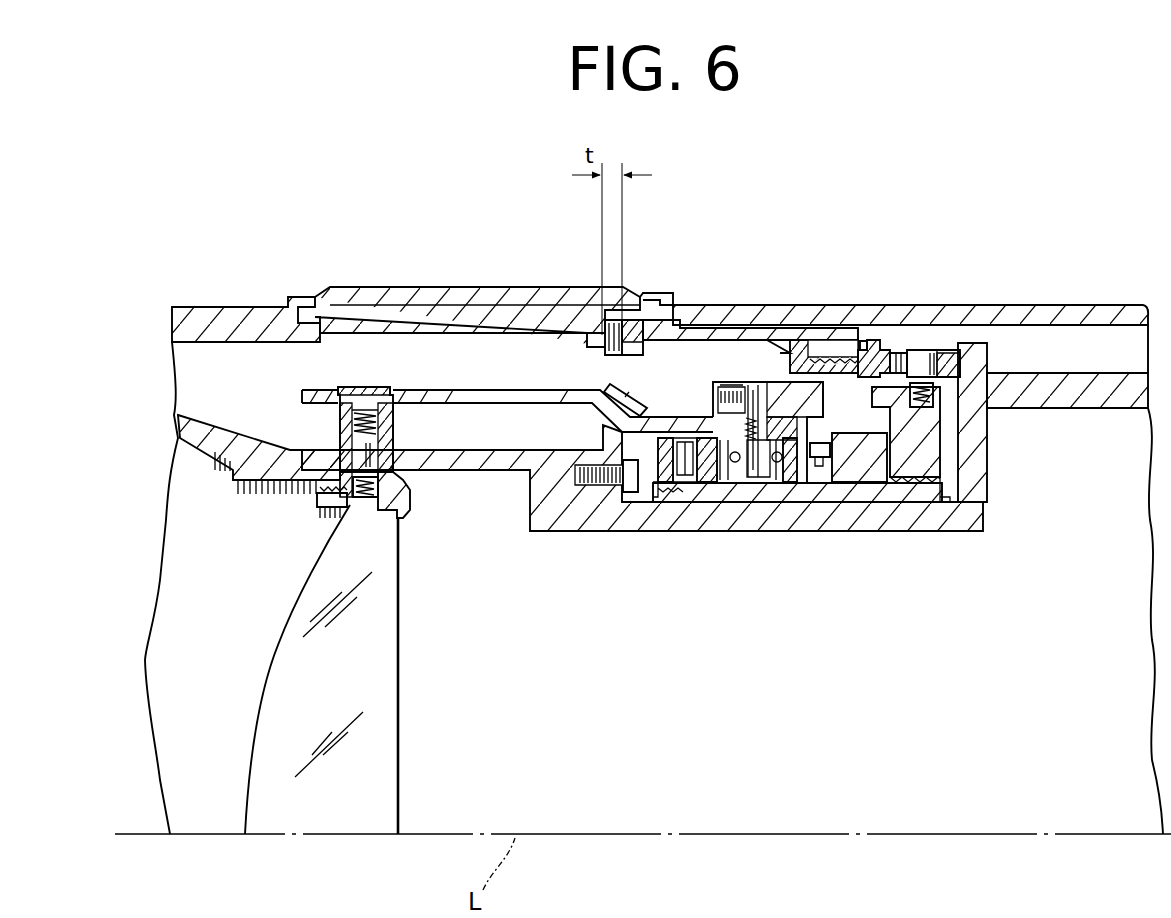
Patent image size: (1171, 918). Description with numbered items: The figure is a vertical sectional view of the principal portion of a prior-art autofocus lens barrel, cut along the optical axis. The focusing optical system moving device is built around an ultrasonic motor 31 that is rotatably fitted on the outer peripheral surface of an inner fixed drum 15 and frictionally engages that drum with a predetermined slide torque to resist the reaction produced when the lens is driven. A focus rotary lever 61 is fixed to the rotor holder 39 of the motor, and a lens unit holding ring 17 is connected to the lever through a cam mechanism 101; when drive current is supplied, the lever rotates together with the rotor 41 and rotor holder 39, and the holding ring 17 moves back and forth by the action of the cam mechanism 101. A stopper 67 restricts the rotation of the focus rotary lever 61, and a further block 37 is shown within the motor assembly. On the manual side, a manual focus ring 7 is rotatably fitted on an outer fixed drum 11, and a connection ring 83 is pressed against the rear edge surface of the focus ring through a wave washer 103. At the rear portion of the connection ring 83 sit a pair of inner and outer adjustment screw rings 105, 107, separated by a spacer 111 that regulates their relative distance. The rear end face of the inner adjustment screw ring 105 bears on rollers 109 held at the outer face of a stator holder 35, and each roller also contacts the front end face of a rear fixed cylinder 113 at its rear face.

The manual focus ring 7 is at (407, 320).
The outer fixed drum 11 is at (190, 318).
The inner fixed drum 15 is at (580, 515).
The lens unit holding ring 17 is at (405, 522).
The ultrasonic motor 31 is at (767, 372).
The stator holder 35 is at (914, 484).
The rotor block 37 is at (858, 484).
The rotor holder 39 is at (800, 484).
The rotor 41 is at (820, 470).
The focus rotary lever 61 is at (497, 400).
The stopper 67 is at (596, 380).
The connection ring 83 is at (699, 340).
The cam mechanism 101 is at (321, 430).
The wave washer 103 is at (625, 322).
The inner adjustment screw ring 105 is at (876, 348).
The outer adjustment screw ring 107 is at (826, 345).
The rollers 109 is at (968, 352).
The spacer 111 is at (864, 340).
The rear fixed cylinder 113 is at (1058, 385).